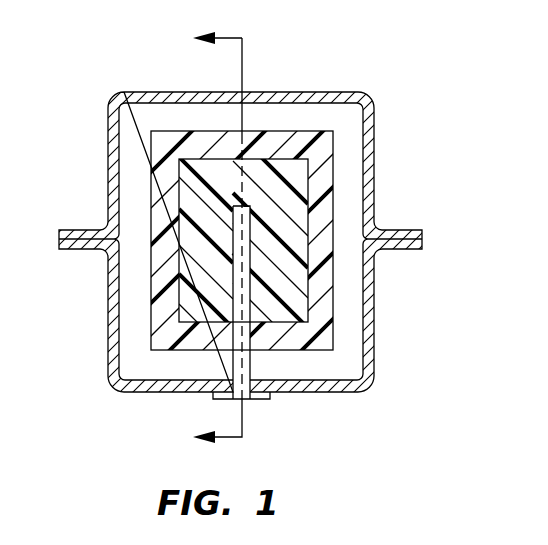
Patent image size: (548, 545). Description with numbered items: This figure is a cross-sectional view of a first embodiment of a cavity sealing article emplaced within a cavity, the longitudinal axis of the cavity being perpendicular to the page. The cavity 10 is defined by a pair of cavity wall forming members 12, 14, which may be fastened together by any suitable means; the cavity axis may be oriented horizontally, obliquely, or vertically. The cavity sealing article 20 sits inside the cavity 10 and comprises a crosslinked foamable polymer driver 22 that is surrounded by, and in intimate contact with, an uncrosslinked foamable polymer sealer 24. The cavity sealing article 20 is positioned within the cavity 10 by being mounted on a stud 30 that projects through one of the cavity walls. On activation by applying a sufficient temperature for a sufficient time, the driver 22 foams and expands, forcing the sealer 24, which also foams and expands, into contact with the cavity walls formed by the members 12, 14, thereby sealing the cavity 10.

The cavity 10 is at (112, 72).
The cavity wall forming member 12 is at (192, 98).
The cavity wall forming member 14 is at (369, 294).
The cavity sealing article 20 is at (294, 116).
The crosslinked foamable polymer driver 22 is at (297, 175).
The uncrosslinked foamable polymer sealer 24 is at (325, 217).
The stud 30 is at (253, 394).